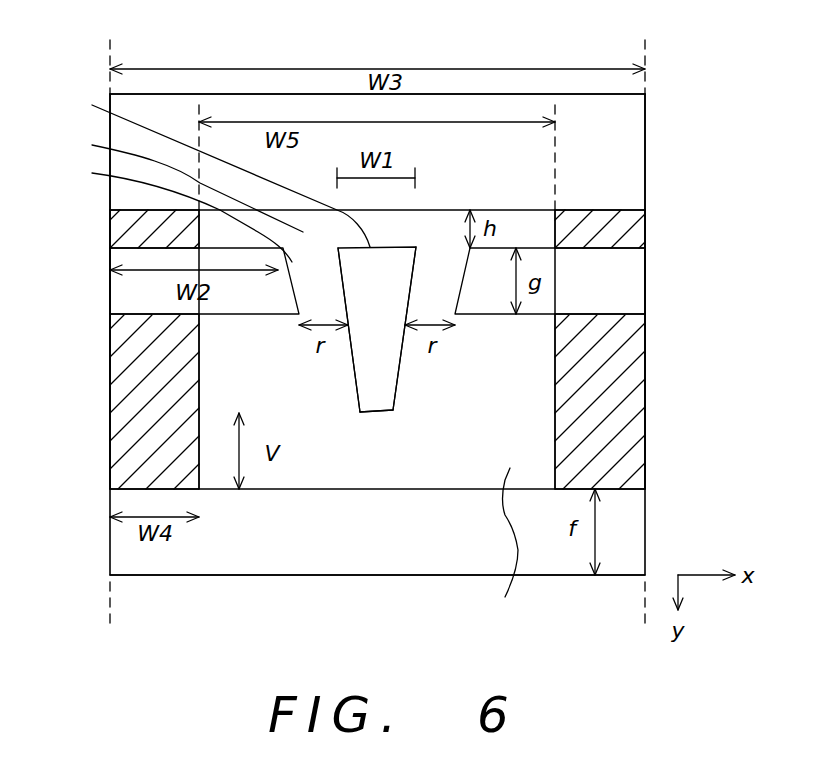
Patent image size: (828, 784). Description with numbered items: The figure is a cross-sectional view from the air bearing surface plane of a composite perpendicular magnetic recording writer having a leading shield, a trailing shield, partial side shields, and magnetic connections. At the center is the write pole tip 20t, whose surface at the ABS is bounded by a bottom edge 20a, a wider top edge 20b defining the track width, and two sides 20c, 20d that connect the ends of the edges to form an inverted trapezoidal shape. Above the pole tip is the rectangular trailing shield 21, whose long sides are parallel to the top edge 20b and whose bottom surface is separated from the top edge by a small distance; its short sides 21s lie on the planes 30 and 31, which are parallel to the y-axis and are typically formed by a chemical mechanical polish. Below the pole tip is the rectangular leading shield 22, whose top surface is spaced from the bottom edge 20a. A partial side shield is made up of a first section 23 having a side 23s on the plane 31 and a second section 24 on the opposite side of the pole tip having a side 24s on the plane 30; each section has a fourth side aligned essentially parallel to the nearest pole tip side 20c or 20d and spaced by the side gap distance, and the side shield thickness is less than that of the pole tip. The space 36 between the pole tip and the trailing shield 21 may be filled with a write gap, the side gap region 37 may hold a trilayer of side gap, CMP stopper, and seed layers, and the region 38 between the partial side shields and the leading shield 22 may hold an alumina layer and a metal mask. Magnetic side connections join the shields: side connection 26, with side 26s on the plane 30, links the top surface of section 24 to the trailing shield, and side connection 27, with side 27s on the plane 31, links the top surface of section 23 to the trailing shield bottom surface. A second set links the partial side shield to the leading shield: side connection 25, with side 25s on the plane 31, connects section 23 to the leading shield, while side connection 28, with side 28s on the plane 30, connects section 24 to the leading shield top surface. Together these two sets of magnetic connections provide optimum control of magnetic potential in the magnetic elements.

The bottom edge 20a is at (380, 412).
The top edge 20b is at (209, 173).
The side 20c is at (353, 375).
The side 20d is at (399, 377).
The pole tip 20t is at (373, 393).
The trailing shield 21 is at (627, 162).
The short side 21s is at (110, 97).
The leading shield 22 is at (122, 548).
The first section of partial side shield 23 is at (125, 288).
The side 23s is at (110, 302).
The second section of partial side shield 24 is at (628, 272).
The side 24s is at (645, 300).
The side connection 25 is at (122, 432).
The side 25s is at (110, 468).
The side connection 26 is at (635, 222).
The side 26s is at (645, 236).
The side connection 27 is at (123, 225).
The side 27s is at (110, 235).
The side connection 28 is at (633, 368).
The side 28s is at (645, 418).
The plane 30 is at (645, 333).
The plane 31 is at (110, 333).
The space 36 is at (177, 183).
The side gap region 37 is at (172, 215).
The region 38 is at (505, 549).